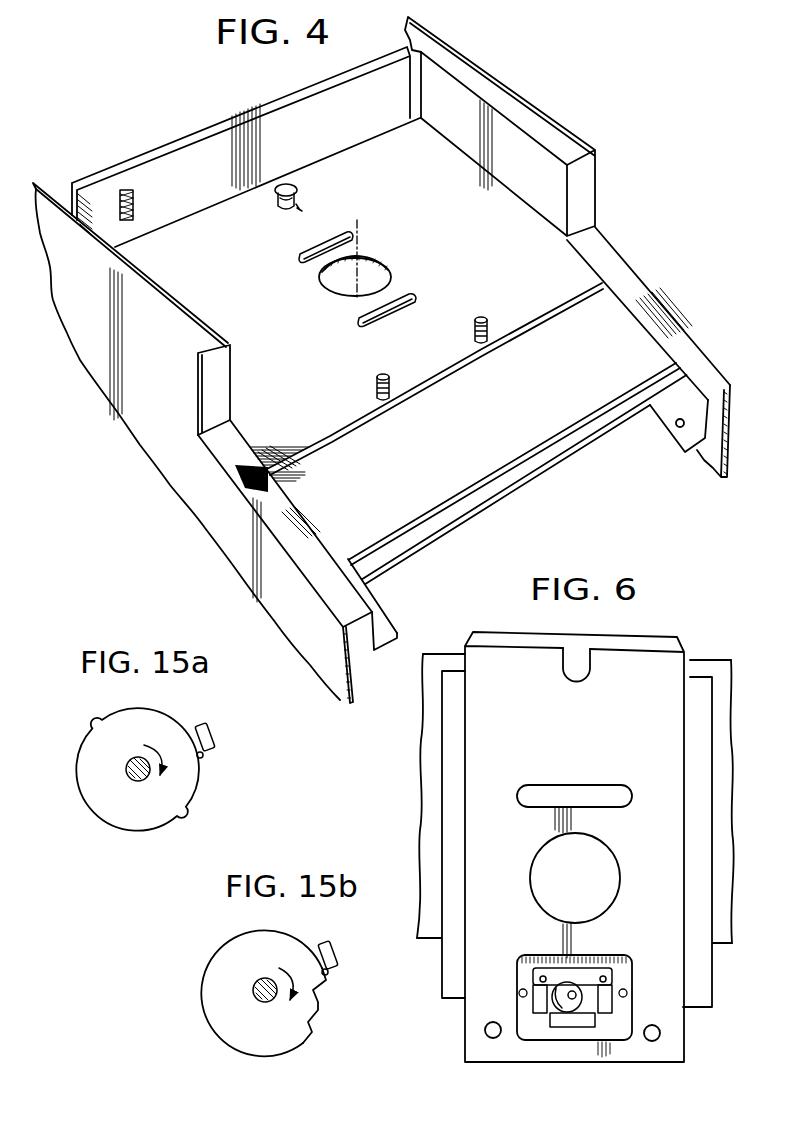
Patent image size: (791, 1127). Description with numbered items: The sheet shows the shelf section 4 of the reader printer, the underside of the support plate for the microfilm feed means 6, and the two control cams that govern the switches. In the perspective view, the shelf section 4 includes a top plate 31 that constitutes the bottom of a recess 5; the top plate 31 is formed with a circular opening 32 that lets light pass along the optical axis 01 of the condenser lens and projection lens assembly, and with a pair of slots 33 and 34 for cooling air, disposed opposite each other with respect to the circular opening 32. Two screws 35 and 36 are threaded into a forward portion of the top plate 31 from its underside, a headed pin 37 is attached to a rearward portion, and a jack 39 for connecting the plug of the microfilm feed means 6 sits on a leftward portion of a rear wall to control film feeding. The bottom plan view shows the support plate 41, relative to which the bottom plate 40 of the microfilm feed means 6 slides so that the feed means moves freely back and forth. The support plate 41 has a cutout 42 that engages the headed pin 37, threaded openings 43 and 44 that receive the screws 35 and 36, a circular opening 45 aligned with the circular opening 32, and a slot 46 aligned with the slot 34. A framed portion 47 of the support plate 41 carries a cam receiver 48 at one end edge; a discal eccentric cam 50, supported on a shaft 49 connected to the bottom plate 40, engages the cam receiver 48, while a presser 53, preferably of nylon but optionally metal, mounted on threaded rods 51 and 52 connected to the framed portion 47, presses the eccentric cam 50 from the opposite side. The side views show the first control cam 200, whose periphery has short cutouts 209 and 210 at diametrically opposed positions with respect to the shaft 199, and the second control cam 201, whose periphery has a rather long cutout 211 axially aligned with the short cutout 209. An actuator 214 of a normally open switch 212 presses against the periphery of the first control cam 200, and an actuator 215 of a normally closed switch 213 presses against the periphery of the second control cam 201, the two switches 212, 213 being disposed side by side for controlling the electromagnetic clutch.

In FIG. 4, the shelf section 4 is at (337, 661).
In FIG. 4, the recess 5 is at (205, 160).
In FIG. 6, the microfilm feed means 6 is at (410, 850).
In FIG. 4, the optical axis 01 is at (360, 240).
In FIG. 4, the top plate 31 is at (576, 258).
In FIG. 4, the circular opening 32 is at (343, 283).
In FIG. 4, the slot 33 is at (397, 302).
In FIG. 4, the slot 34 is at (322, 252).
In FIG. 4, the screw 35 is at (483, 303).
In FIG. 4, the screw 36 is at (384, 372).
In FIG. 4, the headed pin 37 is at (297, 196).
In FIG. 4, the jack 39 is at (136, 202).
In FIG. 6, the bottom plate 40 is at (443, 963).
In FIG. 6, the support plate 41 is at (682, 648).
In FIG. 6, the cutout 42 is at (576, 668).
In FIG. 6, the threaded opening 43 is at (652, 1042).
In FIG. 6, the threaded opening 44 is at (494, 1039).
In FIG. 6, the circular opening 45 is at (548, 872).
In FIG. 6, the slot 46 is at (601, 799).
In FIG. 6, the framed portion 47 is at (538, 1040).
In FIG. 6, the cam receiver 48 is at (581, 1029).
In FIG. 6, the shaft 49 is at (578, 994).
In FIG. 6, the eccentric cam 50 is at (552, 1000).
In FIG. 6, the threaded rod 51 is at (612, 994).
In FIG. 6, the threaded rod 52 is at (533, 988).
In FIG. 6, the presser 53 is at (575, 975).
In FIG. 15a, the shaft 199 is at (127, 768).
In FIG. 15b, the shaft 199 is at (256, 985).
In FIG. 15a, the first control cam 200 is at (153, 712).
In FIG. 15b, the second control cam 201 is at (224, 945).
In FIG. 15a, the short cutout 209 is at (183, 810).
In FIG. 15a, the short cutout 210 is at (97, 722).
In FIG. 15b, the long cutout 211 is at (317, 990).
In FIG. 15a, the normally open switch 212 is at (210, 726).
In FIG. 15b, the normally closed switch 213 is at (333, 947).
In FIG. 15a, the actuator 214 is at (195, 742).
In FIG. 15b, the actuator 215 is at (320, 955).